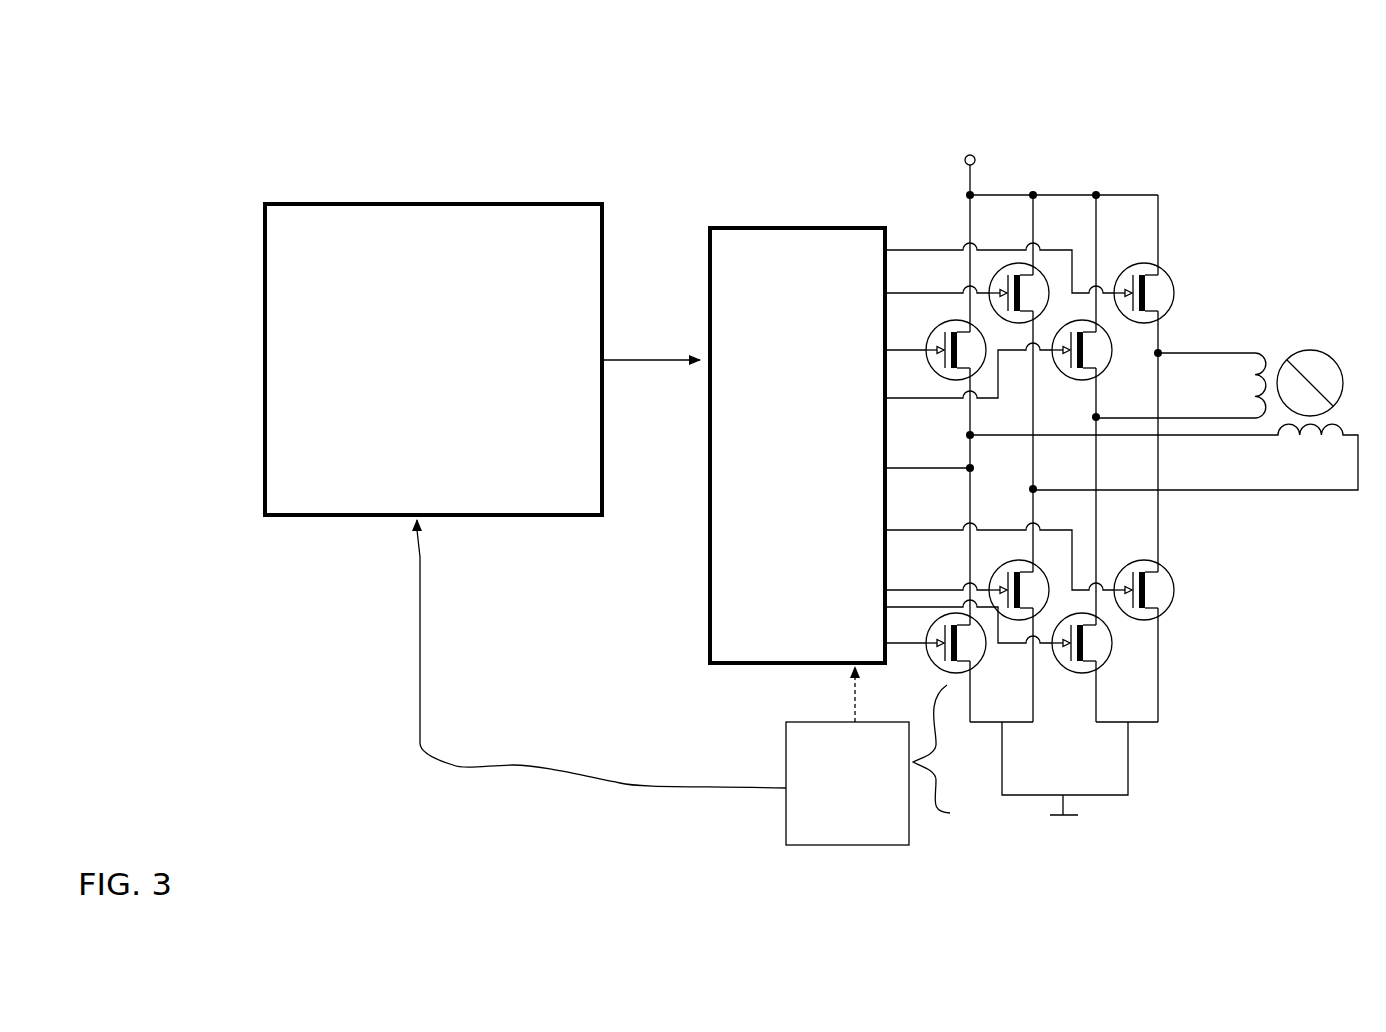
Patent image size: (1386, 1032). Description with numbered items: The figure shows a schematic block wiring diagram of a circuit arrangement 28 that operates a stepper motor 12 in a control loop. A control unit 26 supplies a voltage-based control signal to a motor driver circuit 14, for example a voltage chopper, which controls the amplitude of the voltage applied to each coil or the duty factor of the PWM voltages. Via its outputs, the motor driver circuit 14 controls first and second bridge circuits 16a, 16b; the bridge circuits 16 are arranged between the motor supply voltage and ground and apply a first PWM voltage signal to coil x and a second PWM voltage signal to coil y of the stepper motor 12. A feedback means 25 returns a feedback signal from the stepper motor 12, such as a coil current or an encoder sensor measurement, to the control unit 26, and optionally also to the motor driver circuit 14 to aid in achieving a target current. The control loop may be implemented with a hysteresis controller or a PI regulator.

The circuit arrangement 28 is at (207, 142).
The control unit 26 is at (438, 204).
The motor driver circuit 14 is at (798, 228).
The bridge circuits 16 is at (1012, 440).
The first bridge circuit 16a is at (943, 197).
The second bridge circuit 16b is at (1138, 183).
The stepper motor 12 is at (1273, 268).
The feedback means 25 is at (848, 722).